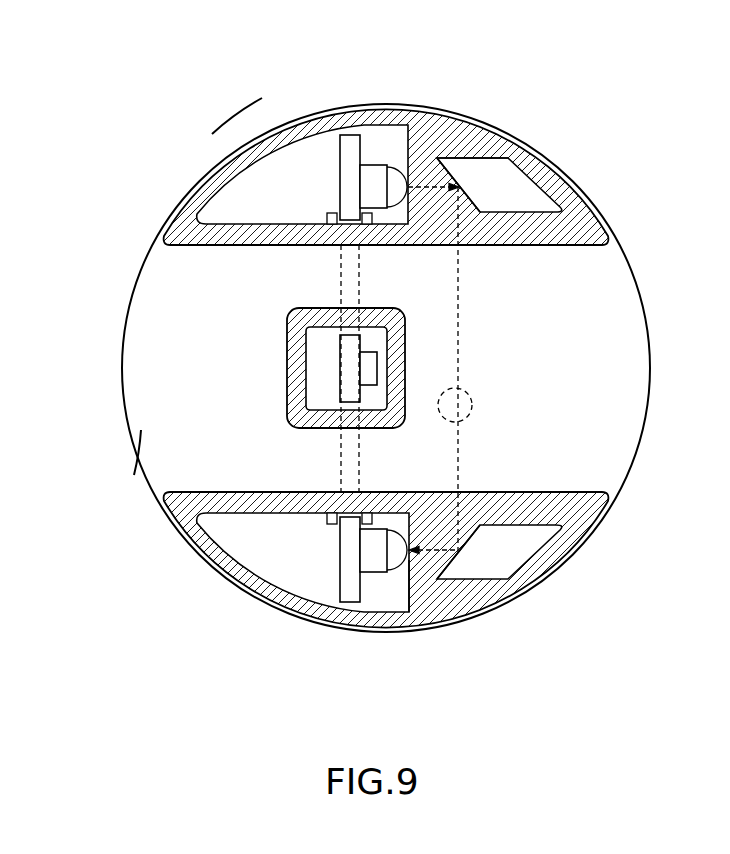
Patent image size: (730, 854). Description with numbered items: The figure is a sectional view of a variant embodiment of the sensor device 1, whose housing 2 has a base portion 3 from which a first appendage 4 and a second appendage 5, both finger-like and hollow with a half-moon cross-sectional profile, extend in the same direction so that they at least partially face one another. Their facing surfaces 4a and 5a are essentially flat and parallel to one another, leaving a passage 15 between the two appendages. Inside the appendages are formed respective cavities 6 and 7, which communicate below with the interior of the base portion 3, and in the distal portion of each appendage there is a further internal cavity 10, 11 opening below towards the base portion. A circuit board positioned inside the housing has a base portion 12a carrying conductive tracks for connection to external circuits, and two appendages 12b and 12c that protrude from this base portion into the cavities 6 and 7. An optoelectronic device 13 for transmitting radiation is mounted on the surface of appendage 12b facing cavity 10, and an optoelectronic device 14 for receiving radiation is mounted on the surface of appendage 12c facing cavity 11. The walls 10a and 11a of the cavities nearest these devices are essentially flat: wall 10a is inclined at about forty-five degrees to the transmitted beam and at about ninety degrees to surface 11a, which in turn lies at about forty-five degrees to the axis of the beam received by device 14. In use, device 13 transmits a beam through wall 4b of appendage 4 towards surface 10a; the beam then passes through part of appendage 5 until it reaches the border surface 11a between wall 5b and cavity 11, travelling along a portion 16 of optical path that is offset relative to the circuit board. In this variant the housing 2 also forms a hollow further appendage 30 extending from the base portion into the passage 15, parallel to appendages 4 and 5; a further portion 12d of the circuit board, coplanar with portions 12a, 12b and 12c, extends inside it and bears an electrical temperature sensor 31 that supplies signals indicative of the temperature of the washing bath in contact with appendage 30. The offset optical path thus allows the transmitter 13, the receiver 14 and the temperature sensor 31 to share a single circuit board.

The sensor device 1 is at (174, 566).
The housing 2 is at (232, 149).
The base portion 3 is at (137, 453).
The first appendage 4 is at (573, 256).
The facing surface of first appendage 4a is at (212, 246).
The wall of first appendage 4b is at (428, 180).
The second appendage 5 is at (216, 481).
The facing surface of second appendage 5a is at (563, 485).
The wall of second appendage 5b is at (436, 562).
The cavity 6 is at (255, 206).
The cavity 7 is at (258, 548).
The internal cavity 10 is at (522, 202).
The wall of cavity 10 10a is at (475, 157).
The internal cavity 11 is at (524, 561).
The border surface of cavity 11 11a is at (470, 540).
The base portion of circuit board 12a is at (350, 256).
The appendage of circuit board 12b is at (350, 150).
The appendage of circuit board 12c is at (347, 580).
The further portion of circuit board 12d is at (347, 396).
The optoelectronic device for transmitting radiation 13 is at (372, 175).
The optoelectronic device for receiving radiation 14 is at (372, 565).
The passage 15 is at (448, 452).
The portion of optical path 16 is at (468, 396).
The further appendage 30 is at (280, 352).
The electrical temperature sensor 31 is at (370, 362).